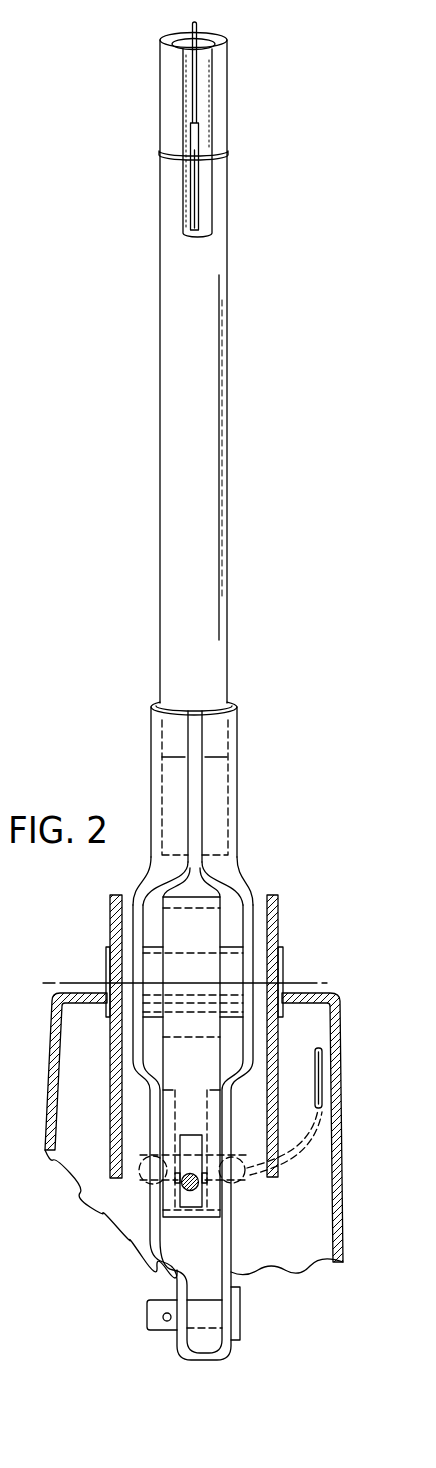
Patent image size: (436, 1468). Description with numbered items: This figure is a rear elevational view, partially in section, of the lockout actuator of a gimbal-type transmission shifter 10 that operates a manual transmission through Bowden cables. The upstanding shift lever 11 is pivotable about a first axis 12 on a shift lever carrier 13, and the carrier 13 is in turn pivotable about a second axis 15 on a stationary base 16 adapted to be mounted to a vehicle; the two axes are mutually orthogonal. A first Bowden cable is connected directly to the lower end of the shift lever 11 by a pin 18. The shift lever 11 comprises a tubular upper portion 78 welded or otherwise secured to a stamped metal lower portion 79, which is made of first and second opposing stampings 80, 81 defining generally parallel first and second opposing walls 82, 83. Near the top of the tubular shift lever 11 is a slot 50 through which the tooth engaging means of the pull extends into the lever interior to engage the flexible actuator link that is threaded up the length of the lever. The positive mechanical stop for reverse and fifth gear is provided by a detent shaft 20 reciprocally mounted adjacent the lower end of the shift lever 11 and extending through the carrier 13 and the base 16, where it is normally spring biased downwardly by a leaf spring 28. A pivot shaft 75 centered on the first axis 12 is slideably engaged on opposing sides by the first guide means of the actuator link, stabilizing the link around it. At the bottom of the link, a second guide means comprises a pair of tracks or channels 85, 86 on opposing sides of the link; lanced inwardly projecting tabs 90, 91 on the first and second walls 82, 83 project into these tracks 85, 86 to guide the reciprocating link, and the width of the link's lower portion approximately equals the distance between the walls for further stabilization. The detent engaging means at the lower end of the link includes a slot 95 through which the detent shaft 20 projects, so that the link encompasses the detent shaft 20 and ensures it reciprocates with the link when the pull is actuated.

The shifter 10 is at (276, 658).
The shift lever 11 is at (219, 537).
The first axis 12 is at (286, 981).
The shift lever carrier 13 is at (279, 903).
The second axis 15 is at (193, 1034).
The stationary base 16 is at (45, 1133).
The pin 18 is at (153, 1332).
The detent shaft 20 is at (187, 1192).
The leaf spring 28 is at (311, 1150).
The slot 50 is at (207, 181).
The pivot shaft 75 is at (125, 958).
The tubular upper portion 78 is at (173, 662).
The stamped metal lower portion 79 is at (238, 863).
The first stamping 80 is at (173, 787).
The second stamping 81 is at (215, 787).
The first wall 82 is at (160, 1107).
The second wall 83 is at (223, 1108).
The track 85 is at (168, 1130).
The track 86 is at (215, 1123).
The lanced tab 90 is at (163, 1170).
The lanced tab 91 is at (217, 1175).
The slot 95 is at (193, 1133).